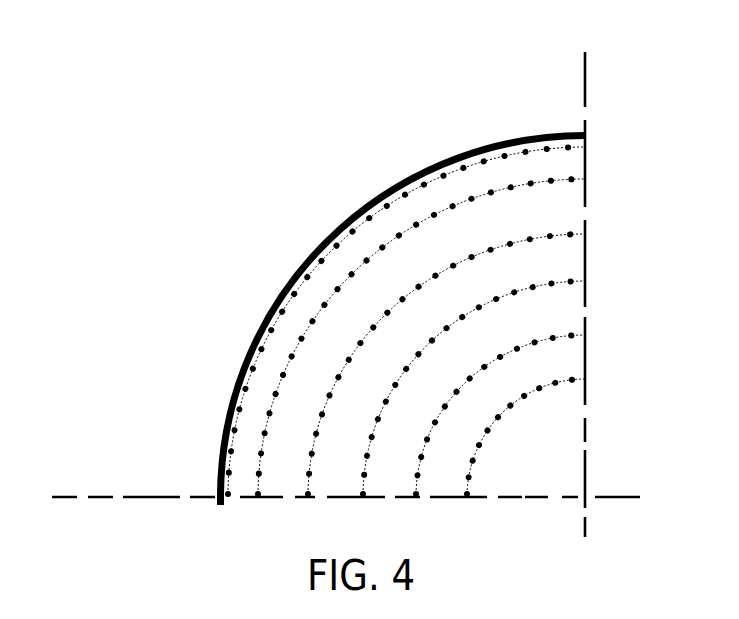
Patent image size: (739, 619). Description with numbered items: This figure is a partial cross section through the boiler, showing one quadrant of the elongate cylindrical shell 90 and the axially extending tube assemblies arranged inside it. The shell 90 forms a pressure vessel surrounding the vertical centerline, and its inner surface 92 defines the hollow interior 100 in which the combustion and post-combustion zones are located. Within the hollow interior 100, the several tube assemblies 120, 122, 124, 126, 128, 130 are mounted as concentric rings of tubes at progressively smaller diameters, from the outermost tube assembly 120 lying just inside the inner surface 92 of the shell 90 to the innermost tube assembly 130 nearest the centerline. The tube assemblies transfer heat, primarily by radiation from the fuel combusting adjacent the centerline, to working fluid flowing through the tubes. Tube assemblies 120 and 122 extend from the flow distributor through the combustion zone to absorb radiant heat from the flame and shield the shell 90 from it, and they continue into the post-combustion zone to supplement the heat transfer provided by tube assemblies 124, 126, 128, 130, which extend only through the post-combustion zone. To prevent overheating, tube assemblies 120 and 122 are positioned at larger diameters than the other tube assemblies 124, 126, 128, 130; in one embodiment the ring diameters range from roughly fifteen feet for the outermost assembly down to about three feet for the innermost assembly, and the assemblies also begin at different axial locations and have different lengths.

The shell 90 is at (453, 157).
The inner surface 92 is at (223, 462).
The hollow interior 100 is at (550, 467).
The tube assembly 120 is at (568, 150).
The tube assembly 122 is at (568, 180).
The tube assembly 124 is at (562, 238).
The tube assembly 126 is at (566, 282).
The tube assembly 128 is at (565, 333).
The tube assembly 130 is at (566, 376).